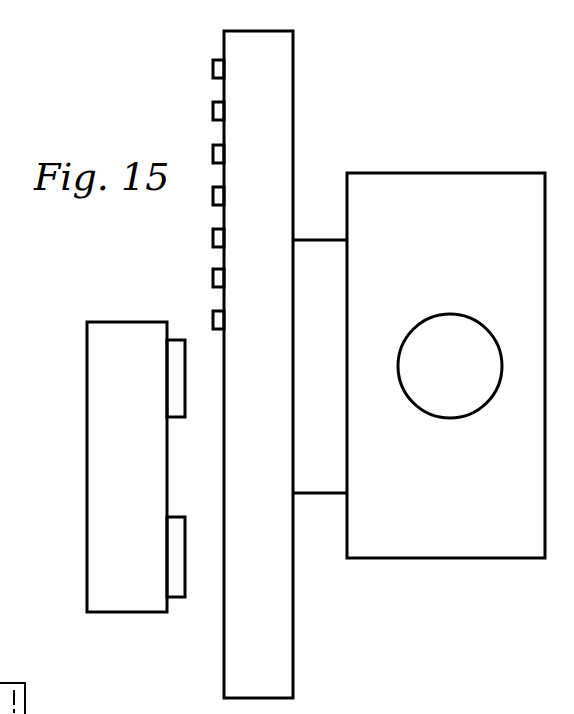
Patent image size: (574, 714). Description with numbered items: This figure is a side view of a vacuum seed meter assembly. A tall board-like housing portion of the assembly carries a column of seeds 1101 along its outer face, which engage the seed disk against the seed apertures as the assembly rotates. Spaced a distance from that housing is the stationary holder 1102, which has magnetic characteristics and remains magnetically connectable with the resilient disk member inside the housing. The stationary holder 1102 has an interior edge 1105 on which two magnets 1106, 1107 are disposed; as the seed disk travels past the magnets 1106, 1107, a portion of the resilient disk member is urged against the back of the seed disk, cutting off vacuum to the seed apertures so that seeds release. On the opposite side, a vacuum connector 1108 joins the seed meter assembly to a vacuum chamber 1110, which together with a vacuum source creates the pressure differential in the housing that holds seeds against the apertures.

The seeds 1101 is at (213, 68).
The stationary holder 1102 is at (87, 382).
The interior edge 1105 is at (174, 338).
The magnet 1106 is at (185, 589).
The magnet 1107 is at (186, 345).
The vacuum connector 1108 is at (325, 495).
The vacuum chamber 1110 is at (447, 314).